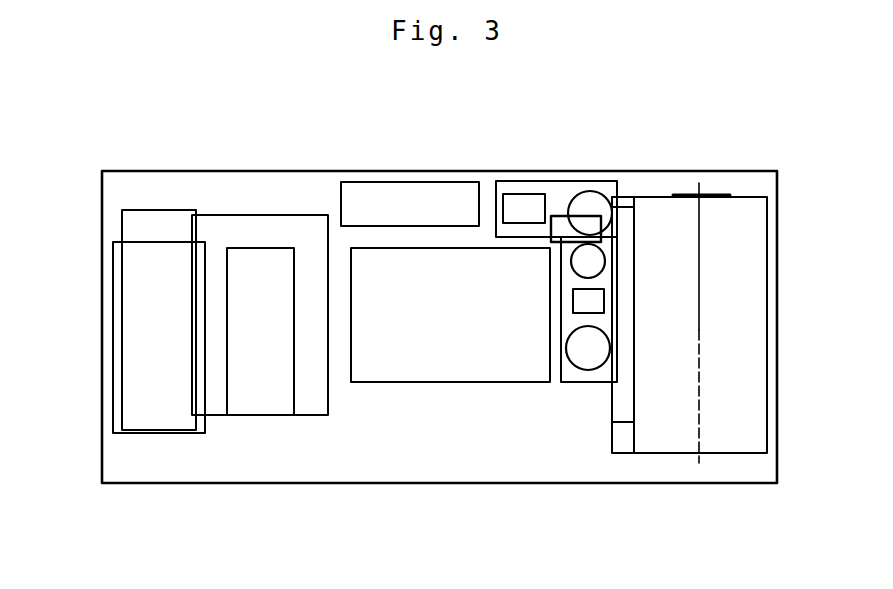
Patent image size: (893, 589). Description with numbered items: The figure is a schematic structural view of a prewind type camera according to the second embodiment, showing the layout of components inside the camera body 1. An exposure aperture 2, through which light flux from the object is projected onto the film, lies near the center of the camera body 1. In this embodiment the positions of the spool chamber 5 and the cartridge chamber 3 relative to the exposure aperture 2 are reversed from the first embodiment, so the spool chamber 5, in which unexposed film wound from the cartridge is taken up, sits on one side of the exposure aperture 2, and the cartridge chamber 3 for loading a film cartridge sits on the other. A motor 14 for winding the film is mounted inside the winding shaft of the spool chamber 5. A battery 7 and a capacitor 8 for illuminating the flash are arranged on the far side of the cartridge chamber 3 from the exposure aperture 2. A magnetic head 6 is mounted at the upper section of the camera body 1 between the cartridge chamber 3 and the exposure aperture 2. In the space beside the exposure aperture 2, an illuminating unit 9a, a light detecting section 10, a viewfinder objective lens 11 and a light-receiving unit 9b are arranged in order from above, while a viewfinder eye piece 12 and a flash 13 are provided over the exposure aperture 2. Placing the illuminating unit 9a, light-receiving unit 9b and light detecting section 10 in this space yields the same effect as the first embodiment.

The camera body 1 is at (773, 165).
The exposure aperture 2 is at (423, 382).
The cartridge chamber 3 is at (744, 207).
The spool chamber 5 is at (268, 218).
The magnetic head 6 is at (556, 216).
The battery 7 is at (115, 315).
The capacitor 8 is at (128, 225).
The illuminating unit 9a is at (592, 198).
The light-receiving unit 9b is at (588, 363).
The light detecting section 10 is at (602, 260).
The viewfinder objective lens 11 is at (573, 303).
The viewfinder eye piece 12 is at (522, 197).
The flash 13 is at (397, 187).
The motor 14 is at (277, 410).